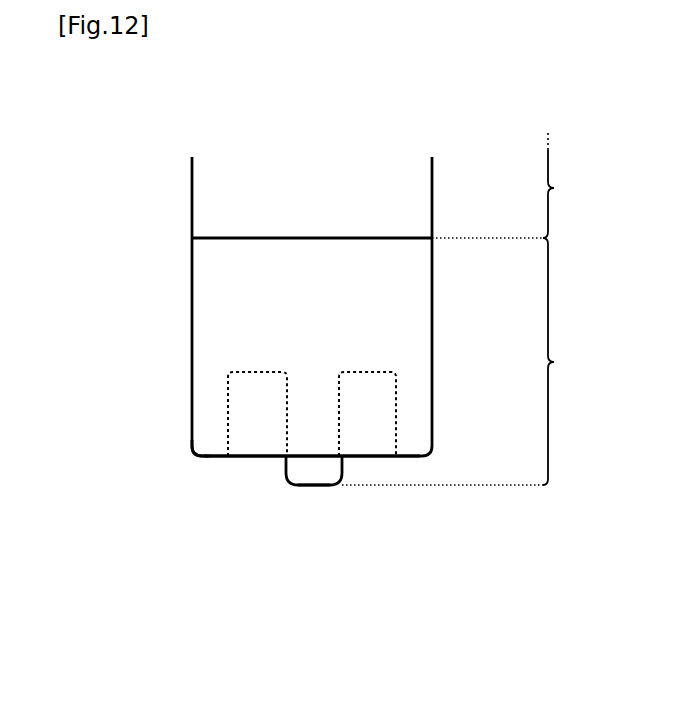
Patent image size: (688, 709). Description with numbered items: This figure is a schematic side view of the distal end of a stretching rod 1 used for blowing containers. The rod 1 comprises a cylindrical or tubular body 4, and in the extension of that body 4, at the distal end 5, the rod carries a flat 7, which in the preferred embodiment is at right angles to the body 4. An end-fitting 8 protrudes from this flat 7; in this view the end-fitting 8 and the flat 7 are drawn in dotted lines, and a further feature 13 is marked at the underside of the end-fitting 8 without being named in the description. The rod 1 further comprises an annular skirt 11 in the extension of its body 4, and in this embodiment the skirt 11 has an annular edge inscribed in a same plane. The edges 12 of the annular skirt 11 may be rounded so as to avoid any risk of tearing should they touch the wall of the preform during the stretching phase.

The stretching rod 1 is at (148, 174).
The body 4 is at (508, 185).
The distal end 5 is at (463, 361).
The flat 7 is at (276, 384).
The end-fitting 8 is at (319, 490).
The annular skirt 11 is at (210, 465).
The edges 12 is at (200, 457).
The protrusion 13 is at (313, 486).